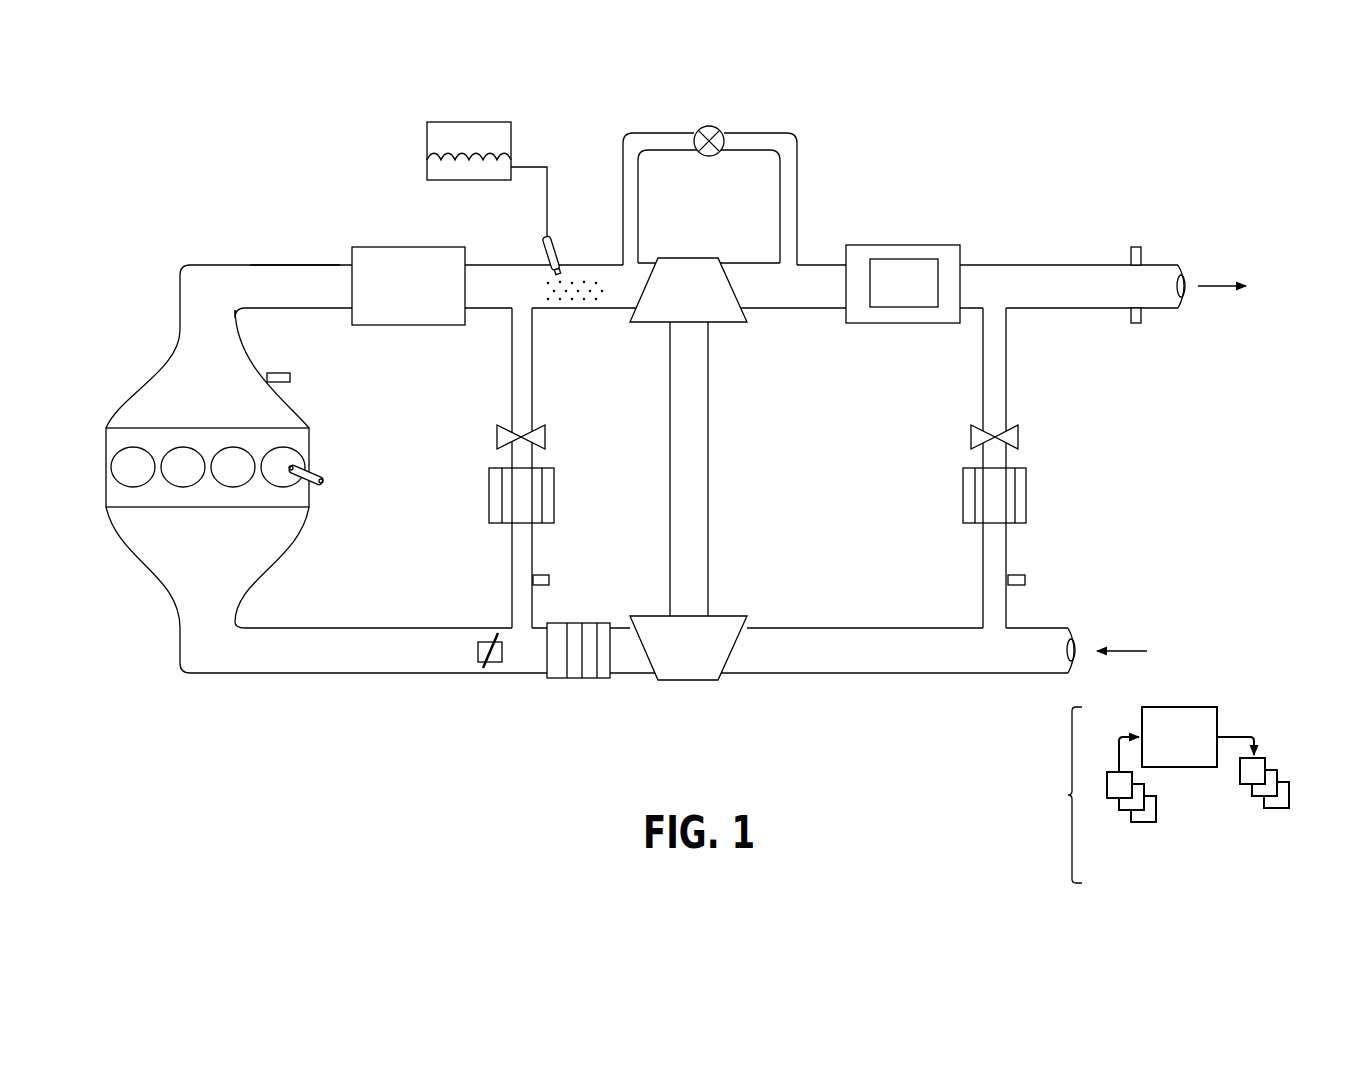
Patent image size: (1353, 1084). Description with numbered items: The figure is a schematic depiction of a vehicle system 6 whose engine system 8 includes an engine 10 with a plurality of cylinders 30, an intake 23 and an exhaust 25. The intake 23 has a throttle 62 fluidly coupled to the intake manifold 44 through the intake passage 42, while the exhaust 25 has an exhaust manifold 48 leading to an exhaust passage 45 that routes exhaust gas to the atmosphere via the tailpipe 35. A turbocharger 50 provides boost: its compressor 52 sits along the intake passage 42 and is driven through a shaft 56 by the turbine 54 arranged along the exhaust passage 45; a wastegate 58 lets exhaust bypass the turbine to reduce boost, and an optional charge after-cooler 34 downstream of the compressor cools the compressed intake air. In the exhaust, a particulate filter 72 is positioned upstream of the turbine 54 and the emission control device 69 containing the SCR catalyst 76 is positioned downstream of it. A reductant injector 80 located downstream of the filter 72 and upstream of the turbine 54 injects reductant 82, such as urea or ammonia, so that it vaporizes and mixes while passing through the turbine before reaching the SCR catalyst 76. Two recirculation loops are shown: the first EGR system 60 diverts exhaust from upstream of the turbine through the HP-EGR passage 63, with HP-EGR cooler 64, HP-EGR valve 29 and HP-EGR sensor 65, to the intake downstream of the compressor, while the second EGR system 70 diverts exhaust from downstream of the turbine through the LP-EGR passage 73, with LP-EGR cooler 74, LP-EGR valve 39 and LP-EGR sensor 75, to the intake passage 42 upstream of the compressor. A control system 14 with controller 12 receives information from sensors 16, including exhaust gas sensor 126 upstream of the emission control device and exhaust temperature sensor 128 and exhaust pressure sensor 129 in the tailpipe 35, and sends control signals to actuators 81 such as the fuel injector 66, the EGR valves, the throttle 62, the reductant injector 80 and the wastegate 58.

The vehicle system 6 is at (1202, 200).
The engine system 8 is at (141, 250).
The engine 10 is at (190, 428).
The engine controller 12 is at (1179, 737).
The control system 14 is at (1068, 795).
The sensors 16 is at (1095, 828).
The intake 23 is at (227, 735).
The exhaust 25 is at (241, 221).
The HP-EGR valve 29 is at (545, 433).
The cylinders 30 is at (122, 452).
The charge after-cooler 34 is at (565, 623).
The tailpipe 35 is at (1151, 265).
The LP-EGR valve 39 is at (1018, 433).
The intake passage 42 is at (797, 628).
The intake manifold 44 is at (219, 560).
The exhaust passage 45 is at (268, 265).
The exhaust manifold 48 is at (219, 381).
The turbocharger 50 is at (753, 416).
The compressor 52 is at (695, 682).
The turbine 54 is at (693, 257).
The shaft 56 is at (708, 497).
The wastegate 58 is at (710, 126).
The first EGR system 60 is at (601, 452).
The throttle 62 is at (478, 654).
The HP-EGR passage 63 is at (512, 386).
The HP-EGR cooler 64 is at (554, 500).
The HP-EGR sensor 65 is at (549, 578).
The fuel injector 66 is at (322, 471).
The emission control devices 69 is at (897, 245).
The second EGR system 70 is at (1106, 451).
The particulate filter 72 is at (421, 295).
The LP-EGR passage 73 is at (983, 390).
The LP-EGR cooler 74 is at (1026, 500).
The LP-EGR sensor 75 is at (1025, 578).
The SCR catalyst 76 is at (916, 293).
The reductant injector 80 is at (558, 255).
The actuators 81 is at (1232, 811).
The reductant 82 is at (488, 121).
The exhaust gas sensor 126 is at (272, 372).
The exhaust temperature sensor 128 is at (1143, 316).
The exhaust pressure sensor 129 is at (1139, 247).